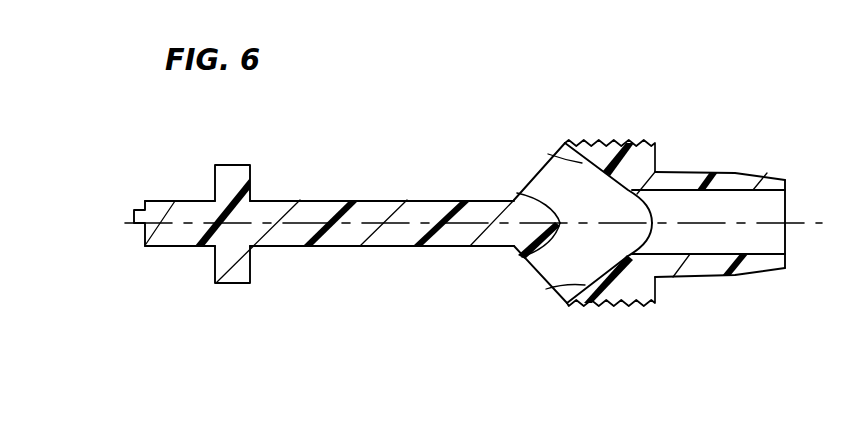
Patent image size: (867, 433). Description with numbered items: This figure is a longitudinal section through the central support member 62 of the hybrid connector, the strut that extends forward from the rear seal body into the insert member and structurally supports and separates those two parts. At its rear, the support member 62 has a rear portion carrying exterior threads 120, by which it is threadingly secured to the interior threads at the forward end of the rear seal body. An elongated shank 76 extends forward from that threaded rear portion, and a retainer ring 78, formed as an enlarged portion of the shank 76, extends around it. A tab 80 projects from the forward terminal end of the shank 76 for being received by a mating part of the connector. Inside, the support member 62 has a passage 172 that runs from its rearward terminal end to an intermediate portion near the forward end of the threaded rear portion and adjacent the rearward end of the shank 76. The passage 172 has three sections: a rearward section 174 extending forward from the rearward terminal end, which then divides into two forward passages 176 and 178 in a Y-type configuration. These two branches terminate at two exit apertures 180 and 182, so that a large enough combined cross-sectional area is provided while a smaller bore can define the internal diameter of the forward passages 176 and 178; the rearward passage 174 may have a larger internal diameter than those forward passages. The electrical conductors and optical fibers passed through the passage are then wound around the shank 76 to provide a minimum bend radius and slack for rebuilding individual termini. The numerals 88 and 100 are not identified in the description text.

The support member 62 is at (368, 191).
The shank 76 is at (408, 246).
The retainer ring 78 is at (233, 168).
The tab 80 is at (133, 210).
The end face 88 is at (797, 221).
The housing body 100 is at (740, 172).
The exterior threads 120 is at (622, 305).
The passage 172 is at (706, 250).
The rearward section 174 is at (770, 245).
The forward passage 176 is at (550, 155).
The forward passage 178 is at (548, 288).
The aperture 180 is at (536, 176).
The aperture 182 is at (536, 271).